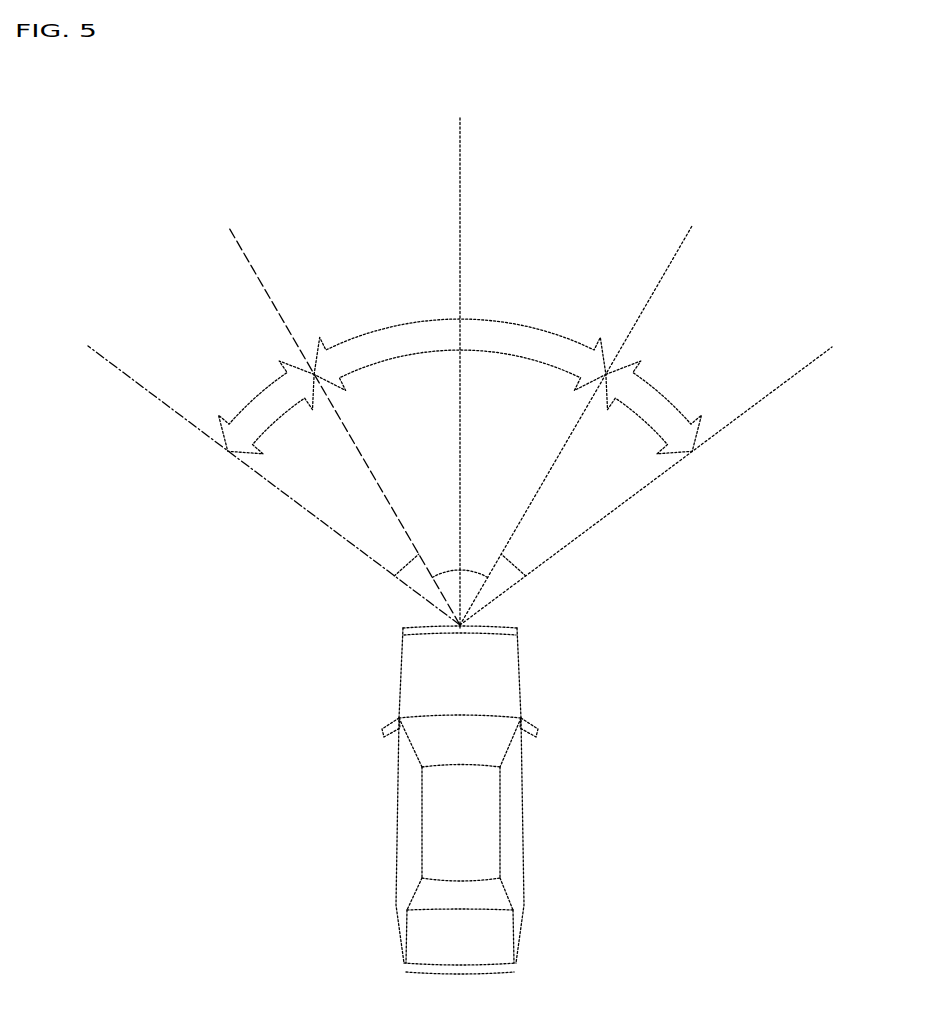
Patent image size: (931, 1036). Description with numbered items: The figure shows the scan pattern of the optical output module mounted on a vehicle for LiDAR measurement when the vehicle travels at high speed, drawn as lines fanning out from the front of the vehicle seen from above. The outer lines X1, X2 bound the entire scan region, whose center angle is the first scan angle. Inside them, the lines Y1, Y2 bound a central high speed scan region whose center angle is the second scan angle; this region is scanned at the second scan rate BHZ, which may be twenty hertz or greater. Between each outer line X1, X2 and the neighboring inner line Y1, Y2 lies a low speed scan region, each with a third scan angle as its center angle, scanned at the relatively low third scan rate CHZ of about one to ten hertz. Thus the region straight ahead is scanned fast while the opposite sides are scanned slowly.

The left boundary of entire scan region X1 is at (263, 475).
The right boundary line of horizontal detection range X2 is at (658, 476).
The left boundary line of horizontal central range B_HZ Y1 is at (338, 413).
The right boundary line of horizontal central range B_HZ Y2 is at (582, 413).
The second scan rate BHZ is at (460, 342).
The third scan rate CHZ is at (460, 407).